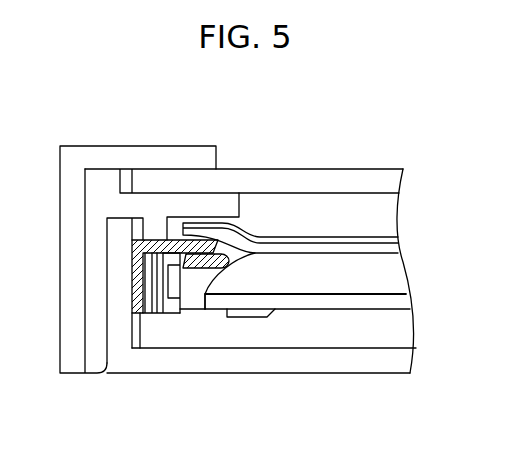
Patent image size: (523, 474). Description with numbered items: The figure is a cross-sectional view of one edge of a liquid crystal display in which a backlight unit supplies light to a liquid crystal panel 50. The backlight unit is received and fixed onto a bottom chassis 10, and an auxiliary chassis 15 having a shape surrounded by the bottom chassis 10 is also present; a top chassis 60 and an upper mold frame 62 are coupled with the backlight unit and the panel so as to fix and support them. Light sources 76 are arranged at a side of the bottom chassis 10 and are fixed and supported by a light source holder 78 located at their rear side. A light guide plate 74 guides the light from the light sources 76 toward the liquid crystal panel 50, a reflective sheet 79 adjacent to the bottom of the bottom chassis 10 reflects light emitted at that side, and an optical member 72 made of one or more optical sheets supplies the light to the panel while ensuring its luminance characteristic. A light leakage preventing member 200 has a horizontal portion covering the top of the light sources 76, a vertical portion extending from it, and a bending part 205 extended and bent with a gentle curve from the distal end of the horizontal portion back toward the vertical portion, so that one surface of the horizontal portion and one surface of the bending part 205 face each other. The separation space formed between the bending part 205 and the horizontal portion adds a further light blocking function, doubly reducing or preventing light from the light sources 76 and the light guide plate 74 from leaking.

The bottom chassis 10 is at (314, 362).
The auxiliary chassis 15 is at (390, 332).
The liquid crystal panel 50 is at (335, 185).
The top chassis 60 is at (75, 207).
The upper mold frame 62 is at (100, 299).
The optical member 72 is at (388, 248).
The light guide plate 74 is at (383, 273).
The reflective sheet 79 is at (390, 301).
The light source 76 is at (178, 280).
The light source holder 78 is at (152, 300).
The light leakage preventing member 200 is at (172, 250).
The bending part 205 is at (213, 268).